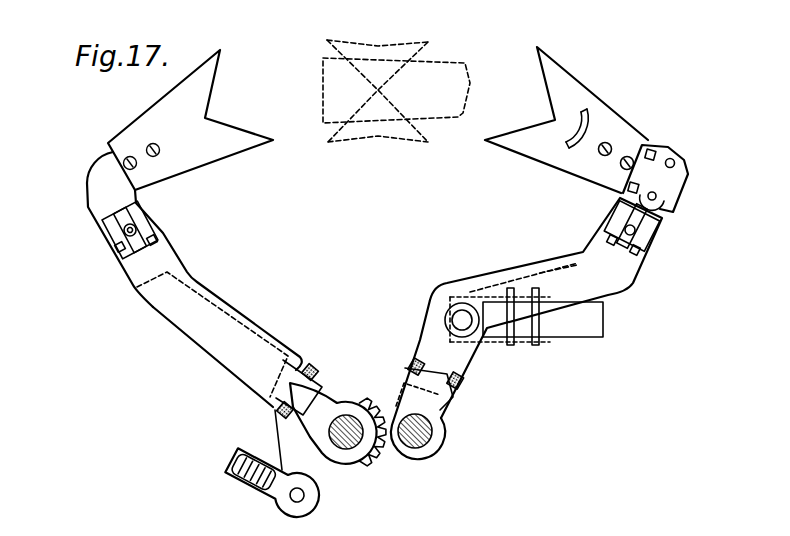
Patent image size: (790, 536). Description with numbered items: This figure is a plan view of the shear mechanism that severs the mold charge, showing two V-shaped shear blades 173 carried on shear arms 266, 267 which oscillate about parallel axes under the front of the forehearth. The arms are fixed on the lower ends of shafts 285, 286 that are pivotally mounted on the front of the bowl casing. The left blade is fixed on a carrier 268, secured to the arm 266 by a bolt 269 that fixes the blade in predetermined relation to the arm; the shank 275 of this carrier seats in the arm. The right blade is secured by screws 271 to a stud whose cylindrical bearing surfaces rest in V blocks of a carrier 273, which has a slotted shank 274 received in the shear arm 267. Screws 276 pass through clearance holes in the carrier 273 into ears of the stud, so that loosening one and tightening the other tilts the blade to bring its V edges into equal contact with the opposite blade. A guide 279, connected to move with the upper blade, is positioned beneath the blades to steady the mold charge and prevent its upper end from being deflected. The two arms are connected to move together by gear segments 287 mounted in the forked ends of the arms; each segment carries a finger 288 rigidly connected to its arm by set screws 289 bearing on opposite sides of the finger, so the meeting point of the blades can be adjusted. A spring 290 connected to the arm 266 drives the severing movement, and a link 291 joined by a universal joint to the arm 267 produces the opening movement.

The shear blades 173 is at (233, 158).
The shear arm 266 is at (217, 298).
The shear arm 267 is at (473, 280).
The carrier 268 is at (92, 202).
The bolt 269 is at (123, 233).
The screws 271 is at (611, 147).
The carrier 273 is at (660, 218).
The slotted shank 274 is at (636, 252).
The shank 275 is at (157, 238).
The screws 276 is at (673, 153).
The guide 279 is at (560, 148).
The shaft 285 is at (349, 445).
The shaft 286 is at (430, 445).
The gear segments 287 is at (373, 455).
The finger 288 is at (330, 398).
The set screws 289 is at (267, 417).
The spring 290 is at (237, 462).
The link 291 is at (592, 328).